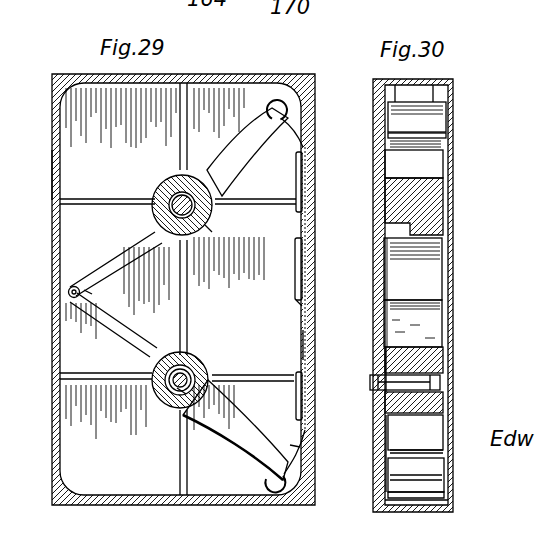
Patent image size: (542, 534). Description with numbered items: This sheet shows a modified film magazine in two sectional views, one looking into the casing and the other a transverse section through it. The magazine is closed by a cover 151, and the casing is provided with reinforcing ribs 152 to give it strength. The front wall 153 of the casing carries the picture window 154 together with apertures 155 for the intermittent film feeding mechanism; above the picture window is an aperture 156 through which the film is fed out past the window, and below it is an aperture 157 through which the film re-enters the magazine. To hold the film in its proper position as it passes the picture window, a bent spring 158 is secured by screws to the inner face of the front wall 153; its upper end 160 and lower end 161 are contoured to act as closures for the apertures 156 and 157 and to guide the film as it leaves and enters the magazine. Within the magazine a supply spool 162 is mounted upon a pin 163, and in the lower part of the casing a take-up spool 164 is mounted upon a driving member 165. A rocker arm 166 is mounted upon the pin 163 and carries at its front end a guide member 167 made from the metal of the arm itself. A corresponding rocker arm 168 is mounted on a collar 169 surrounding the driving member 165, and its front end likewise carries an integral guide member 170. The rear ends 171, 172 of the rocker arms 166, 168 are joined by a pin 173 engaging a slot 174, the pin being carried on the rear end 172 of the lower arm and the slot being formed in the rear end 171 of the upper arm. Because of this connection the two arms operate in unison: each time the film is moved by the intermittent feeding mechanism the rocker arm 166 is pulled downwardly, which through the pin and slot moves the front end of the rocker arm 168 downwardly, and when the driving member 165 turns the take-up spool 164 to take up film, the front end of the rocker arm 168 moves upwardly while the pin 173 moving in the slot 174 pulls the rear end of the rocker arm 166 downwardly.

In FIG. 29, the cover 151 is at (179, 252).
In FIG. 30, the cover 151 is at (456, 160).
In FIG. 29, the reinforcing ribs 152 is at (287, 235).
In FIG. 29, the front wall 153 is at (52, 172).
In FIG. 30, the front wall 153 is at (375, 497).
In FIG. 29, the picture window 154 is at (306, 267).
In FIG. 30, the picture window 154 is at (428, 270).
In FIG. 29, the apertures 155 is at (318, 342).
In FIG. 29, the aperture 156 is at (306, 190).
In FIG. 29, the aperture 157 is at (308, 404).
In FIG. 29, the bent spring 158 is at (297, 303).
In FIG. 30, the bent spring 158 is at (438, 302).
In FIG. 29, the upper end of spring 160 is at (309, 135).
In FIG. 30, the upper end of spring 160 is at (441, 143).
In FIG. 29, the lower end of spring 161 is at (308, 450).
In FIG. 30, the lower end of spring 161 is at (444, 443).
In FIG. 29, the supply spool 162 is at (160, 192).
In FIG. 30, the supply spool 162 is at (446, 211).
In FIG. 29, the pin 163 is at (207, 231).
In FIG. 30, the pin 163 is at (432, 190).
In FIG. 29, the take-up spool 164 is at (203, 357).
In FIG. 30, the take-up spool 164 is at (424, 358).
In FIG. 29, the driving member 165 is at (177, 388).
In FIG. 30, the driving member 165 is at (372, 385).
In FIG. 29, the rocker arm 166 is at (229, 172).
In FIG. 30, the rocker arm 166 is at (377, 110).
In FIG. 29, the guide member 167 is at (268, 108).
In FIG. 30, the guide member 167 is at (430, 110).
In FIG. 29, the rocker arm 168 is at (212, 420).
In FIG. 30, the rocker arm 168 is at (414, 453).
In FIG. 30, the collar 169 is at (383, 359).
In FIG. 29, the guide member 170 is at (268, 470).
In FIG. 30, the guide member 170 is at (444, 482).
In FIG. 29, the rear end of rocker arm 171 is at (118, 248).
In FIG. 29, the rear end of rocker arm 172 is at (127, 338).
In FIG. 29, the pin 173 is at (92, 292).
In FIG. 29, the slot 174 is at (75, 285).